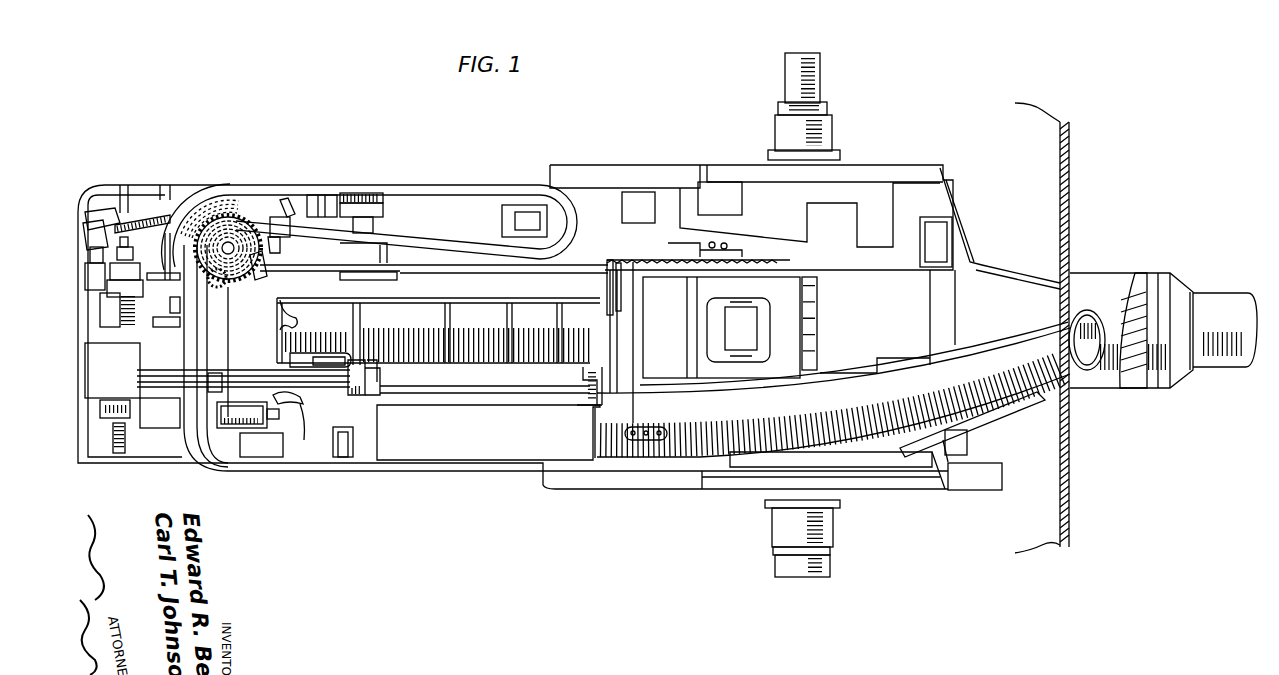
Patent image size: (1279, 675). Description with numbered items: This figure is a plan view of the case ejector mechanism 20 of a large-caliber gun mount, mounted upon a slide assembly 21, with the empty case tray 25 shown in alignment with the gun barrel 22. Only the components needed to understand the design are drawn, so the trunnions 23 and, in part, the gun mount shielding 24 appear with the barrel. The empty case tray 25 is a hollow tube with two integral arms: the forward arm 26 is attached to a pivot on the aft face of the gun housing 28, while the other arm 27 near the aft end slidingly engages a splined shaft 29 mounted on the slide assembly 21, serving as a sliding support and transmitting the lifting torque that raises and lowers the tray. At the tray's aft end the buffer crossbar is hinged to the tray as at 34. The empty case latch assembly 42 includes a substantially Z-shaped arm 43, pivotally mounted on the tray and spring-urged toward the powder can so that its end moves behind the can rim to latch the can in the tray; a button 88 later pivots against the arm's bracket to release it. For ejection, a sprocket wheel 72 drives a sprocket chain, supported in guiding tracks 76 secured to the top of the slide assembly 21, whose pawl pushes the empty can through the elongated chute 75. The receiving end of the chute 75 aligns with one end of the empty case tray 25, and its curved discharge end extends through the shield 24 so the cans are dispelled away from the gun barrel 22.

The case ejector mechanism 20 is at (433, 178).
The slide assembly 21 is at (171, 463).
The gun barrel 22 is at (1218, 368).
The trunnions 23 is at (818, 126).
The gun mount shielding 24 is at (1070, 440).
The empty case tray 25 is at (471, 325).
The forward arm 26 is at (590, 383).
The arm 27 is at (382, 405).
The gun housing 28 is at (596, 288).
The splined shaft 29 is at (253, 370).
The hinge point of crossbar on tray 34 is at (298, 318).
The empty case latch assembly 42 is at (234, 421).
The Z-shaped arm 43 is at (320, 357).
The sprocket wheel 72 is at (233, 243).
The chute 75 is at (838, 417).
The guiding tracks 76 is at (438, 244).
The button 88 is at (304, 440).